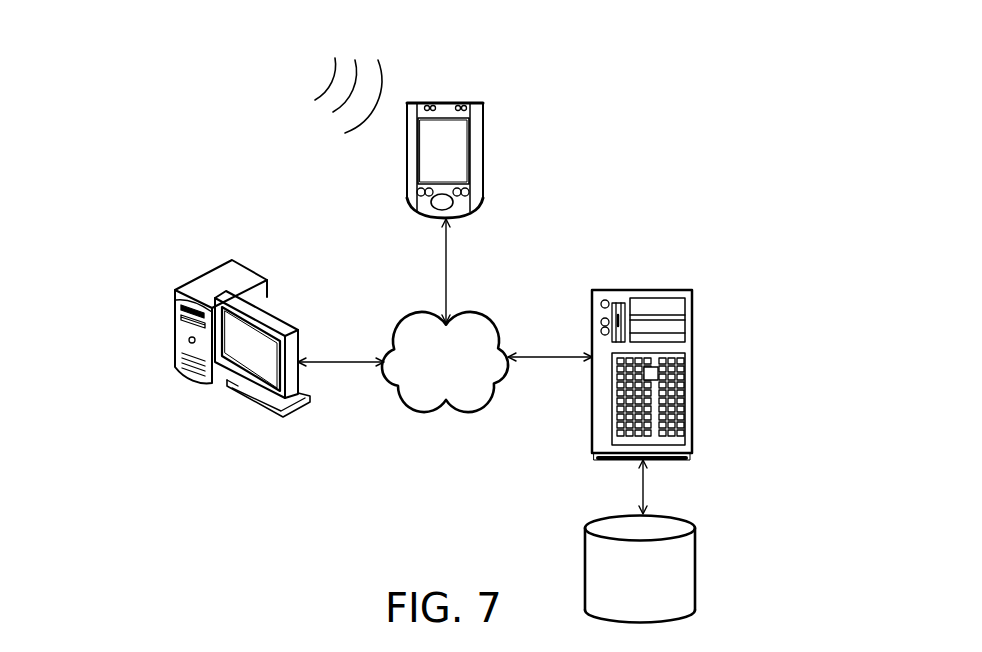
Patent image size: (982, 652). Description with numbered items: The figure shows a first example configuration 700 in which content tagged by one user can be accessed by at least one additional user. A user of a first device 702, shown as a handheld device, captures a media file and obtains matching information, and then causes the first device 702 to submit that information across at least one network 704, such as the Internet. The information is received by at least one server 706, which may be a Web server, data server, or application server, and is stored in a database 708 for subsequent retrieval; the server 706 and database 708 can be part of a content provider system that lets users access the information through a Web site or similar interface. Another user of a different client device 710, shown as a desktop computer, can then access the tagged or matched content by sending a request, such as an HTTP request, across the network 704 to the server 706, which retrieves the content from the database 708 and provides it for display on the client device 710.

The example configuration 700 is at (769, 119).
The first device 702 is at (483, 136).
The network 704 is at (427, 395).
The server 706 is at (692, 352).
The database 708 is at (623, 611).
The client device 710 is at (220, 266).